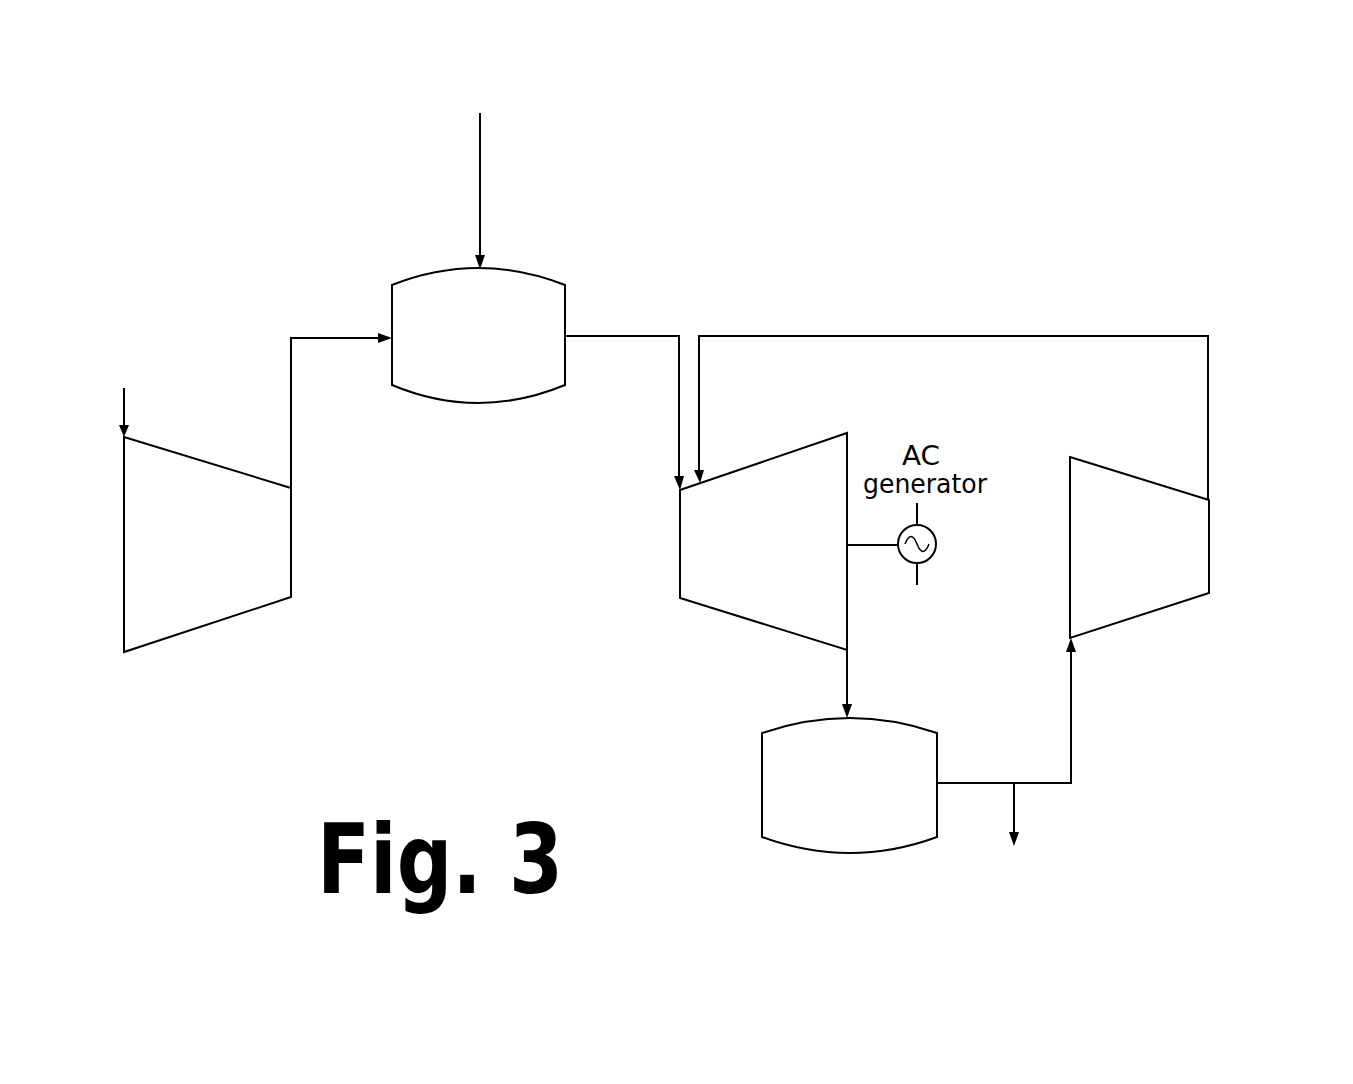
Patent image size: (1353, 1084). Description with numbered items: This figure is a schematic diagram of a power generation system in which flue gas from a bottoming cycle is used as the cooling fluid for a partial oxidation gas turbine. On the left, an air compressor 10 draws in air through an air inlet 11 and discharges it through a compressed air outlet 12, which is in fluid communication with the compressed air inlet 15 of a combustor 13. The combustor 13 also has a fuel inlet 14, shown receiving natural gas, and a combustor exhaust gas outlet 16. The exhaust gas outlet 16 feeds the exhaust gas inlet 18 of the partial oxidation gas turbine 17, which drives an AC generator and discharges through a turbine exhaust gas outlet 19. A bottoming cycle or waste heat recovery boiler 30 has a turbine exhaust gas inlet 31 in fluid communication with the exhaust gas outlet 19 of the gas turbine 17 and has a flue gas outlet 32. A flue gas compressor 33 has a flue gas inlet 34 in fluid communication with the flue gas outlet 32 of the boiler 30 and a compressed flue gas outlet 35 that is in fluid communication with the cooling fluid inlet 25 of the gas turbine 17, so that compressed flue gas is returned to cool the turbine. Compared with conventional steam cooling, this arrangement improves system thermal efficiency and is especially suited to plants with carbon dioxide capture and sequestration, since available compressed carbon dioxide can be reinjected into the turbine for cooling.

The air compressor 10 is at (222, 620).
The air inlet 11 is at (127, 437).
The compressed air outlet 12 is at (291, 488).
The combustor 13 is at (392, 290).
The fuel inlet 14 is at (468, 265).
The compressed air inlet 15 is at (388, 334).
The combustor exhaust gas outlet 16 is at (565, 340).
The gas turbine 17 is at (685, 600).
The exhaust gas inlet 18 is at (680, 490).
The turbine exhaust gas outlet 19 is at (843, 650).
The cooling fluid inlet 25 is at (700, 482).
The bottoming cycle 30 is at (763, 772).
The turbine exhaust gas inlet 31 is at (857, 707).
The flue gas outlet 32 is at (937, 772).
The flue gas compressor 33 is at (1163, 607).
The flue gas inlet 34 is at (1070, 630).
The compressed flue gas outlet 35 is at (1209, 498).